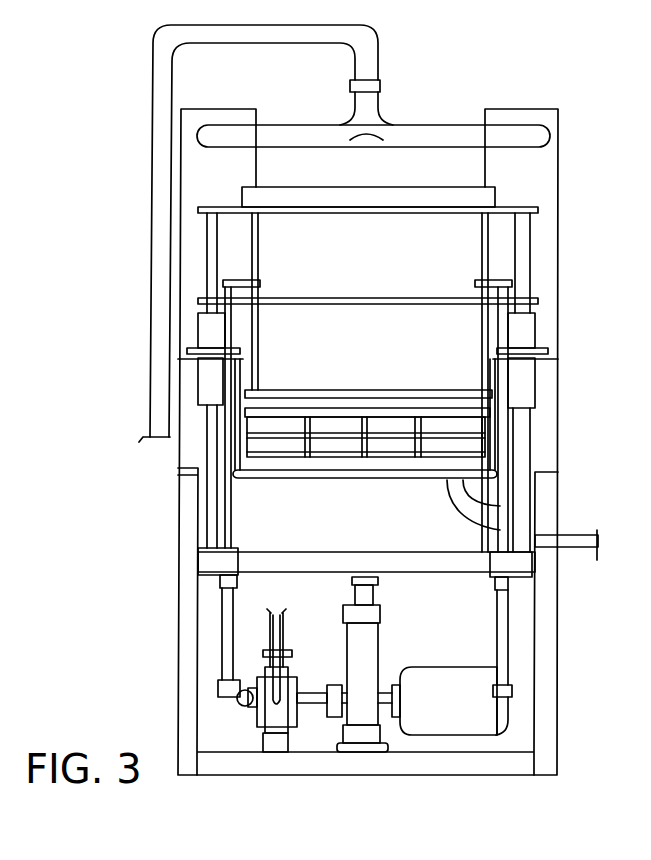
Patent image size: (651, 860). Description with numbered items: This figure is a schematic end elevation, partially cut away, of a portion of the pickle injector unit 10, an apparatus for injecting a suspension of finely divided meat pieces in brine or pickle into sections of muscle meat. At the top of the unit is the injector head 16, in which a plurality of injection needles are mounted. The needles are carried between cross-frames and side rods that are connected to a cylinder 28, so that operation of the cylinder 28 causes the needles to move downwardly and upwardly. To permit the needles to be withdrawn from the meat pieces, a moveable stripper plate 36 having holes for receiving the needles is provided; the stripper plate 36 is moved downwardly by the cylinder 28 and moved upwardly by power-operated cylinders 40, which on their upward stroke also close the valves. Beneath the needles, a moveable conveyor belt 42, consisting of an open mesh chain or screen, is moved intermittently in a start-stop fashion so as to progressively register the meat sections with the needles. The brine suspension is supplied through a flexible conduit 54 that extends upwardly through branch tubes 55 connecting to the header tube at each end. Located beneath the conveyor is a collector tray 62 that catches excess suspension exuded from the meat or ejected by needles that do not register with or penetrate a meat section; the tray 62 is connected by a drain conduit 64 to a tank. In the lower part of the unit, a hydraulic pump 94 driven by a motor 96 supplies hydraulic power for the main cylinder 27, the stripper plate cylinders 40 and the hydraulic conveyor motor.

The pickle injector unit 10 is at (160, 507).
The injector head 16 is at (440, 108).
The main cylinder 27 is at (382, 658).
The cylinder 28 is at (310, 552).
The stripper plate 36 is at (412, 402).
The cylinders 40 is at (220, 647).
The conveyor belt 42 is at (430, 425).
The flexible conduit 54 is at (158, 87).
The branch tubes 55 is at (305, 130).
The collector tray 62 is at (515, 500).
The drain conduit 64 is at (573, 548).
The pump 94 is at (255, 718).
The motor 96 is at (463, 680).